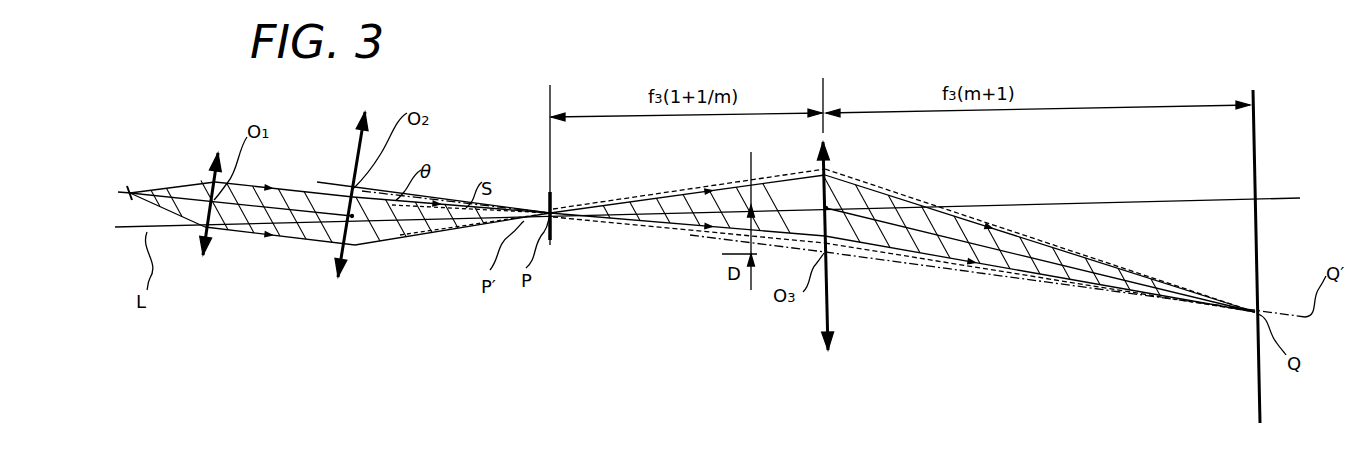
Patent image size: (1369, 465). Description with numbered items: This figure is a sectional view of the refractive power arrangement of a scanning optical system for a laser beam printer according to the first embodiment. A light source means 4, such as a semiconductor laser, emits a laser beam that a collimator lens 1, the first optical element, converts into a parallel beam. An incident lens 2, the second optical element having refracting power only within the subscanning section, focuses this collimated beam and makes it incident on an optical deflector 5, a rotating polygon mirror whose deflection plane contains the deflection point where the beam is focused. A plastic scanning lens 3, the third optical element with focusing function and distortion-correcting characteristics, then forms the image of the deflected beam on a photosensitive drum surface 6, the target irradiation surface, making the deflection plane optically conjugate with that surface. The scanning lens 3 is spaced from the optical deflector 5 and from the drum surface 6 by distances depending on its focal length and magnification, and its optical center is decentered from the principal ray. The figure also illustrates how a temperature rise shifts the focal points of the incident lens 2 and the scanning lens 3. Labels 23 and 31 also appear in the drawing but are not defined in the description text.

The collimator lens 1 is at (203, 256).
The incident lens 2 is at (338, 278).
The f-θ lens 3 is at (828, 350).
The light source means 4 is at (131, 187).
The optical deflector 5 is at (553, 202).
The photosensitive drum surface 6 is at (1255, 127).
The optical center of second lens 23 is at (353, 218).
The optical axis point on third lens 31 is at (827, 208).